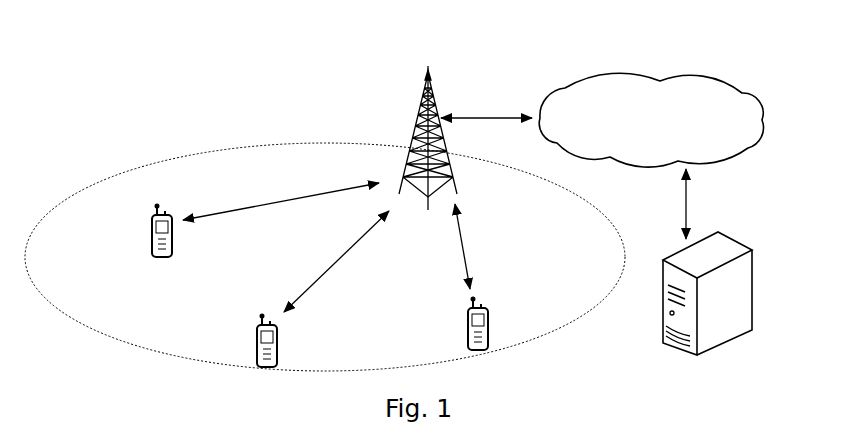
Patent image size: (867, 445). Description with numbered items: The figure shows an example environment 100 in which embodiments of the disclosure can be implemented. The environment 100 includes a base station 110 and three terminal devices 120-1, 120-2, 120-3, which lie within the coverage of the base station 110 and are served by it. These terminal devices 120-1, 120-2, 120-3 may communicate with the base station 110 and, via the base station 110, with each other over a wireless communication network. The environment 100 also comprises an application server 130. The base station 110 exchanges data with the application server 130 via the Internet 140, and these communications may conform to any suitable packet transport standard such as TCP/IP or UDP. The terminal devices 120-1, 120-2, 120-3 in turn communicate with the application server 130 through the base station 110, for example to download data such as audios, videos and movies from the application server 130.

The environment 100 is at (319, 46).
The base station 110 is at (437, 75).
The terminal device 120-1 is at (151, 221).
The terminal device 120-2 is at (256, 331).
The terminal device 120-3 is at (466, 318).
The application server 130 is at (722, 236).
The Internet 140 is at (613, 72).